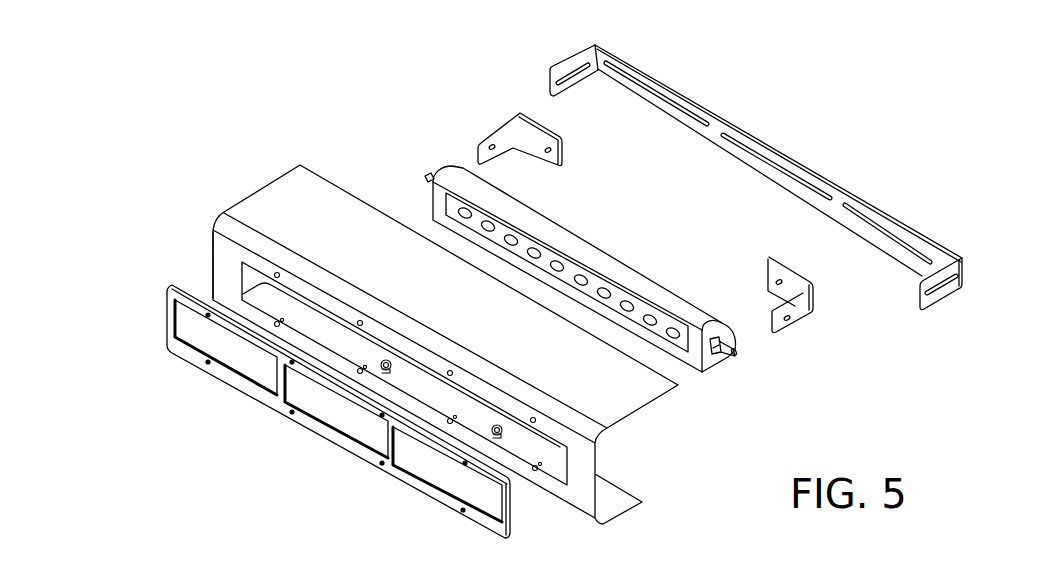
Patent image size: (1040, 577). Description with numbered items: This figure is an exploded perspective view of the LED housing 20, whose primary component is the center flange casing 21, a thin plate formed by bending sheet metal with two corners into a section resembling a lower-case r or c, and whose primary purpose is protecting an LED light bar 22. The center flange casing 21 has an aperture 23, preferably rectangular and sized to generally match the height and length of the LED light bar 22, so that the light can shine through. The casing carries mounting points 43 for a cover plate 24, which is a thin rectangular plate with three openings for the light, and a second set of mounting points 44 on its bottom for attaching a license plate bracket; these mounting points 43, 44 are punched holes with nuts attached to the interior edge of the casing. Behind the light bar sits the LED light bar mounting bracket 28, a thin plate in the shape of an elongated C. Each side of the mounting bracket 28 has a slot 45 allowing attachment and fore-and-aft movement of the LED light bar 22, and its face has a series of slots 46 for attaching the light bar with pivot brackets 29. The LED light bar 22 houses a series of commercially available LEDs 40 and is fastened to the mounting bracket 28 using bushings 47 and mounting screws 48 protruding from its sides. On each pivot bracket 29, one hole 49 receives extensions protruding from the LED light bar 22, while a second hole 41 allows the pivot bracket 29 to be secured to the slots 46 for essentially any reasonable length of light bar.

The LED housing 20 is at (904, 126).
The center flange casing 21 is at (622, 408).
The LED light bar 22 is at (595, 269).
The aperture 23 is at (553, 453).
The cover plate 24 is at (510, 522).
The LED light bar mounting bracket 28 is at (775, 195).
The pivot bracket 29 is at (669, 225).
The LEDs 40 is at (608, 292).
The second hole 41 is at (777, 282).
The mounting points 43 is at (216, 236).
The second set of mounting points 44 is at (500, 434).
The slot 45 is at (945, 290).
The slots 46 is at (893, 233).
The bushings 47 is at (712, 350).
The mounting screws 48 is at (768, 364).
The hole 49 is at (789, 320).